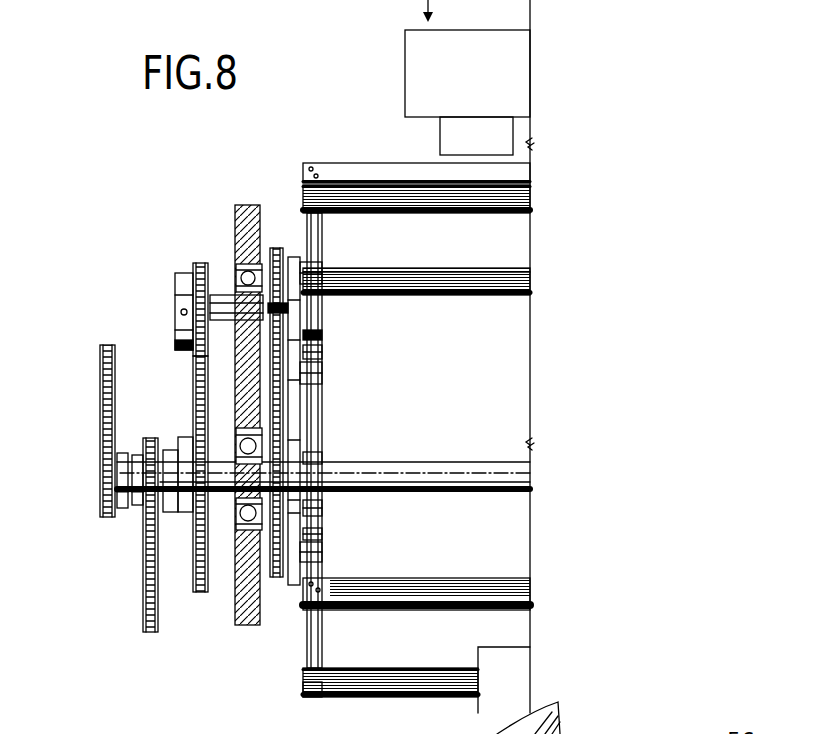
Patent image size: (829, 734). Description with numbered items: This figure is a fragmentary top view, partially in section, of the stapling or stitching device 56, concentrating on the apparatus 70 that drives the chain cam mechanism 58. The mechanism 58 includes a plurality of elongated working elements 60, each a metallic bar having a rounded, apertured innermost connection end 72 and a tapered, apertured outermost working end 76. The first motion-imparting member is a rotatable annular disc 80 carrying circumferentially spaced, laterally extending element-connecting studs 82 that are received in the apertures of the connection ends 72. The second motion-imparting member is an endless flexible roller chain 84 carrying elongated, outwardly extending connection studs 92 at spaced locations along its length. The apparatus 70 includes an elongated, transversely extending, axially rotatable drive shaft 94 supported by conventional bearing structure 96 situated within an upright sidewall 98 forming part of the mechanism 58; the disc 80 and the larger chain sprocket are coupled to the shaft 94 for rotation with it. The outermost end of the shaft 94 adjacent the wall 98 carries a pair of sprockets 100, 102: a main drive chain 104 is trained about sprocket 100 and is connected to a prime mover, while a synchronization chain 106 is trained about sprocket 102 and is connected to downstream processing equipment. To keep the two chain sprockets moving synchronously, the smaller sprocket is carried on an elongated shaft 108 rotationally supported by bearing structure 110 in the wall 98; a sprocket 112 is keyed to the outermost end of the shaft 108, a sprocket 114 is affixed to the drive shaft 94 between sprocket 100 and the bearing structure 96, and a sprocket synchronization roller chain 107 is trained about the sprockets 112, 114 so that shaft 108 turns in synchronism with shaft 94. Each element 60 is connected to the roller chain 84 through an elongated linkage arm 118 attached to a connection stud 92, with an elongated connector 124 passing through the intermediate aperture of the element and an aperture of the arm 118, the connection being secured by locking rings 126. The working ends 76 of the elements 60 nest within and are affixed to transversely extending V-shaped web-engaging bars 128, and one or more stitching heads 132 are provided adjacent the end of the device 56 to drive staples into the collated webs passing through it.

The stapling or stitching device 56 is at (632, 122).
The chain cam mechanism 58 is at (366, 392).
The working elements 60 is at (324, 232).
The apparatus 70 is at (72, 520).
The innermost connection end 72 is at (340, 482).
The outermost working end 76 is at (315, 688).
The annular disc 80 is at (320, 518).
The element-connecting studs 82 is at (322, 456).
The roller chain 84 is at (270, 580).
The connection studs 92 is at (284, 265).
The drive shaft 94 is at (532, 478).
The bearing structure 96 is at (218, 520).
The upright sidewall 98 is at (237, 608).
The sprocket 100 is at (118, 482).
The sprocket 102 is at (138, 508).
The main drive chain 104 is at (103, 358).
The synchronization chain 106 is at (150, 610).
The sprocket synchronization roller chain 107 is at (195, 352).
The shaft 108 is at (228, 272).
The bearing structure 110 is at (238, 268).
The sprocket 112 is at (178, 330).
The sprocket 114 is at (215, 455).
The linkage arm 118 is at (317, 282).
The connector 124 is at (322, 355).
The locking rings 126 is at (322, 333).
The web-engaging bars 128 is at (532, 282).
The stitching head 132 is at (515, 45).